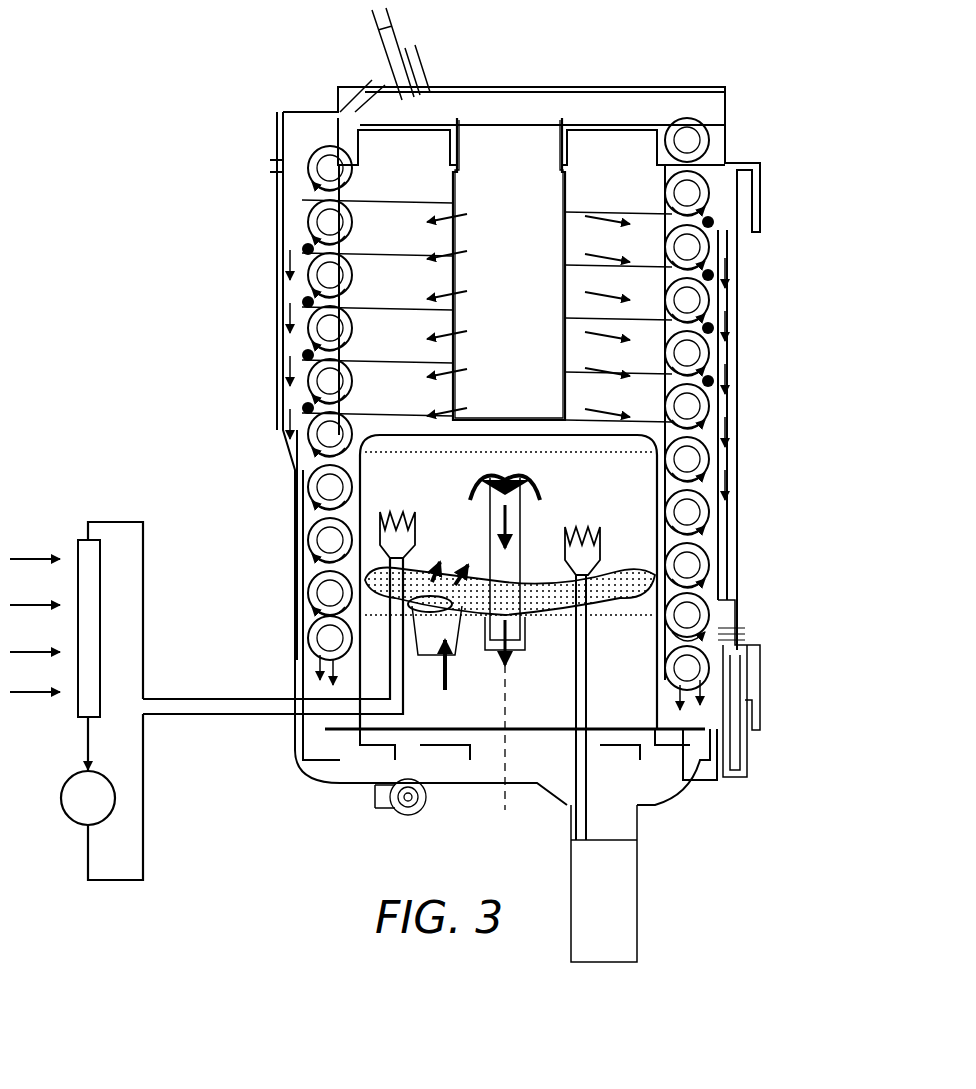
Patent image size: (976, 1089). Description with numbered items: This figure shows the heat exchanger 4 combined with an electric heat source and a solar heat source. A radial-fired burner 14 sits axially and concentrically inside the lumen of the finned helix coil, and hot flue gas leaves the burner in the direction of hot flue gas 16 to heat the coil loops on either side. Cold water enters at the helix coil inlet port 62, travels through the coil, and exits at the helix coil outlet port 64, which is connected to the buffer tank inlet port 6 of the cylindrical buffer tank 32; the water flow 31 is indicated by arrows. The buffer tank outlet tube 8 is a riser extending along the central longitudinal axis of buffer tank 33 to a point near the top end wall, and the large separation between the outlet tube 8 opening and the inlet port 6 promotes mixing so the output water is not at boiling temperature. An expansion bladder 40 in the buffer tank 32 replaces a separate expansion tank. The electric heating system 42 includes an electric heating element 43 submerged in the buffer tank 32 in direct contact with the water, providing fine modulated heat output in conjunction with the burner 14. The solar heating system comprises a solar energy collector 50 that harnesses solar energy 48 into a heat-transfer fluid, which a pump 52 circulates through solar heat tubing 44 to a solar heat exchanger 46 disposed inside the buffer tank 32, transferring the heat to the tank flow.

The heat exchanger 4 is at (812, 140).
The buffer tank inlet port 6 is at (425, 650).
The buffer tank outlet tube 8 is at (535, 633).
The radial-fired burner 14 is at (525, 218).
The direction of hot flue gas 16 is at (282, 330).
The water flow 31 is at (540, 480).
The buffer tank 32 is at (589, 529).
The central longitudinal axis of buffer tank 33 is at (498, 792).
The expansion bladder 40 is at (478, 600).
The electric heating system 42 is at (572, 812).
The electric heating element 43 is at (597, 527).
The solar heat tubing 44 is at (134, 522).
The solar heat exchanger 46 is at (380, 535).
The solar energy 48 is at (40, 559).
The solar energy collector 50 is at (78, 540).
The pump 52 is at (115, 788).
The helix coil inlet port 62 is at (715, 658).
The helix coil outlet port 64 is at (722, 108).